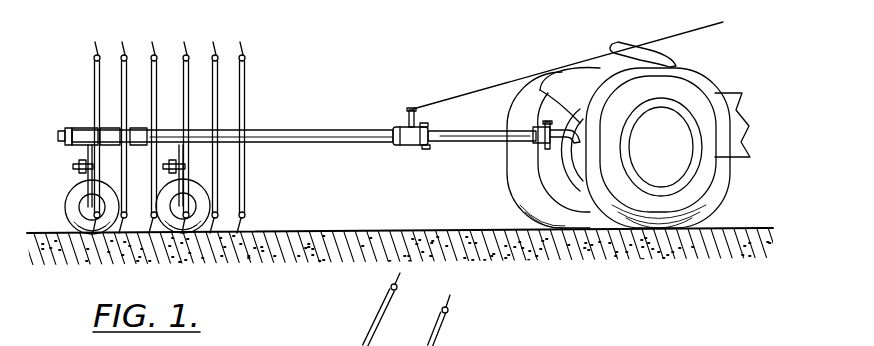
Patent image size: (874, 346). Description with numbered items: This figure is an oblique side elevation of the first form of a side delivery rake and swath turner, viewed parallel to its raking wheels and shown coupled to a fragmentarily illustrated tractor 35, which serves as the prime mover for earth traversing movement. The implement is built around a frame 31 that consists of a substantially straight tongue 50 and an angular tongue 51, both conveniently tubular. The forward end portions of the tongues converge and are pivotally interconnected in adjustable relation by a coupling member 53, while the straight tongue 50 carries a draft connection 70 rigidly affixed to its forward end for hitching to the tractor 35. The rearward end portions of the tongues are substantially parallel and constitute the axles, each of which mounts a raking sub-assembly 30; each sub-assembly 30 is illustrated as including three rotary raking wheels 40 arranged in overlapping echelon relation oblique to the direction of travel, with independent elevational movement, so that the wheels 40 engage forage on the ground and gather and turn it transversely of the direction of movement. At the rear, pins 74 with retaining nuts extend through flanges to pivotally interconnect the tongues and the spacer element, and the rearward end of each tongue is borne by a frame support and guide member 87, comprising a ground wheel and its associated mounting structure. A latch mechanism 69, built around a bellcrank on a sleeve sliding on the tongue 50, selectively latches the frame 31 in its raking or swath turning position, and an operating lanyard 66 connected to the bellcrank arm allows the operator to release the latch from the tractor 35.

The raking sub-assemblies 30 is at (128, 42).
The frame 31 is at (312, 129).
The tractor 35 is at (737, 150).
The rotary raking wheels 40 is at (437, 345).
The straight tongue 50 is at (473, 132).
The angular tongue 51 is at (359, 142).
The coupling member 53 is at (415, 147).
The operating lanyard 66 is at (701, 31).
The latch mechanism 69 is at (410, 113).
The draft connection 70 is at (535, 158).
The pins 74 is at (61, 128).
The frame support and guide members 87 is at (83, 152).